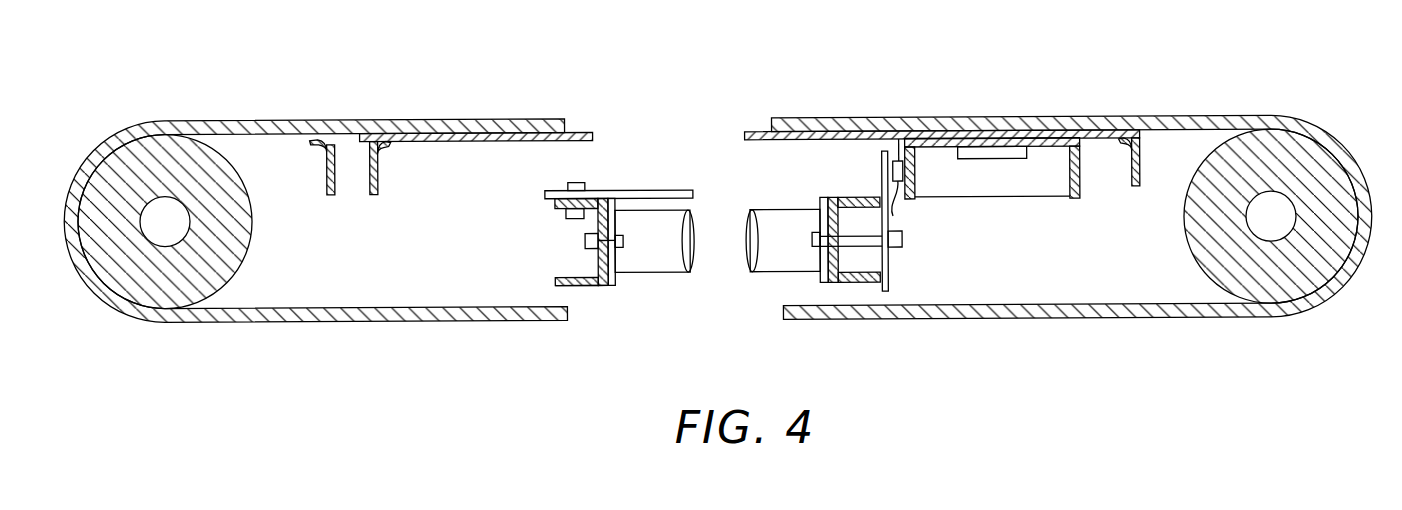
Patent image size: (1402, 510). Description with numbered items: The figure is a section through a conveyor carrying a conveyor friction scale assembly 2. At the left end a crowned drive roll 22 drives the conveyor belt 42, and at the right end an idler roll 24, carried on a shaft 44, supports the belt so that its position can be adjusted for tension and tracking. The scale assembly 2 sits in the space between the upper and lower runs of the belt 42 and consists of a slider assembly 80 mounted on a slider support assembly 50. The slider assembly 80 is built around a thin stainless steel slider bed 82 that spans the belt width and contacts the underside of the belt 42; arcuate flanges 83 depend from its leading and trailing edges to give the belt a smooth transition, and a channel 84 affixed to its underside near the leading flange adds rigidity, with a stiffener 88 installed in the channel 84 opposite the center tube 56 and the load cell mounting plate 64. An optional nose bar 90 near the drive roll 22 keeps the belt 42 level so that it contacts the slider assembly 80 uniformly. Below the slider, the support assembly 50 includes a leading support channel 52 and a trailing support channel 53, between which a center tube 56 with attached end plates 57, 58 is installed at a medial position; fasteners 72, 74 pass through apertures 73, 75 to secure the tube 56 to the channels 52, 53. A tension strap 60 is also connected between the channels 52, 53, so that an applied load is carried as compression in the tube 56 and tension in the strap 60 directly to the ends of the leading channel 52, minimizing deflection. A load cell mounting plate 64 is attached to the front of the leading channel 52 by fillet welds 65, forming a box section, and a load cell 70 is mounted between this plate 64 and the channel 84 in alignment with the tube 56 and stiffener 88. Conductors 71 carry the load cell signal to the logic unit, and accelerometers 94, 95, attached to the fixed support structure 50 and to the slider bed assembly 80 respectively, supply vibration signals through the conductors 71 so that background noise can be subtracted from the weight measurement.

The conveyor friction scale assembly 2 is at (796, 285).
The drive roll 22 is at (103, 182).
The idler roll 24 is at (1295, 262).
The conveyor belt 42 is at (202, 118).
The shaft 44 is at (1277, 208).
The slider support assembly 50 is at (572, 289).
The leading support channel 52 is at (855, 282).
The trailing support channel 53 is at (589, 288).
The center tube 56 is at (656, 259).
The end plate 57 is at (827, 200).
The end plate 58 is at (613, 287).
The tension strap 60 is at (645, 190).
The load cell mounting plate 64 is at (892, 291).
The fillet weld 65 is at (879, 193).
The load cell 70 is at (894, 160).
The conductors 71 is at (897, 207).
The fastener 72 is at (592, 236).
The aperture 73 is at (595, 255).
The fastener 74 is at (903, 233).
The aperture 75 is at (840, 250).
The slider assembly 80 is at (752, 129).
The slider bed 82 is at (450, 132).
The arcuate flange 83 is at (371, 140).
The channel 84 is at (1079, 184).
The stiffener 88 is at (1050, 198).
The nose bar 90 is at (317, 158).
The accelerometer 94 is at (903, 262).
The accelerometer 95 is at (992, 160).